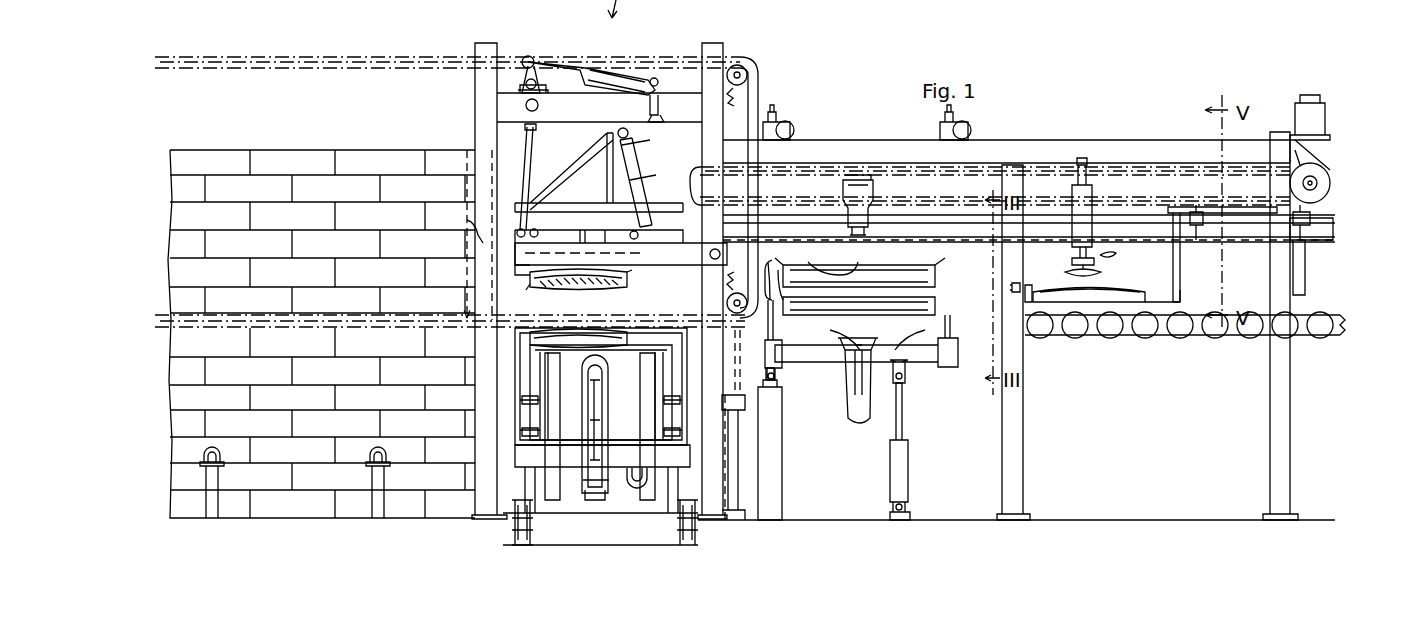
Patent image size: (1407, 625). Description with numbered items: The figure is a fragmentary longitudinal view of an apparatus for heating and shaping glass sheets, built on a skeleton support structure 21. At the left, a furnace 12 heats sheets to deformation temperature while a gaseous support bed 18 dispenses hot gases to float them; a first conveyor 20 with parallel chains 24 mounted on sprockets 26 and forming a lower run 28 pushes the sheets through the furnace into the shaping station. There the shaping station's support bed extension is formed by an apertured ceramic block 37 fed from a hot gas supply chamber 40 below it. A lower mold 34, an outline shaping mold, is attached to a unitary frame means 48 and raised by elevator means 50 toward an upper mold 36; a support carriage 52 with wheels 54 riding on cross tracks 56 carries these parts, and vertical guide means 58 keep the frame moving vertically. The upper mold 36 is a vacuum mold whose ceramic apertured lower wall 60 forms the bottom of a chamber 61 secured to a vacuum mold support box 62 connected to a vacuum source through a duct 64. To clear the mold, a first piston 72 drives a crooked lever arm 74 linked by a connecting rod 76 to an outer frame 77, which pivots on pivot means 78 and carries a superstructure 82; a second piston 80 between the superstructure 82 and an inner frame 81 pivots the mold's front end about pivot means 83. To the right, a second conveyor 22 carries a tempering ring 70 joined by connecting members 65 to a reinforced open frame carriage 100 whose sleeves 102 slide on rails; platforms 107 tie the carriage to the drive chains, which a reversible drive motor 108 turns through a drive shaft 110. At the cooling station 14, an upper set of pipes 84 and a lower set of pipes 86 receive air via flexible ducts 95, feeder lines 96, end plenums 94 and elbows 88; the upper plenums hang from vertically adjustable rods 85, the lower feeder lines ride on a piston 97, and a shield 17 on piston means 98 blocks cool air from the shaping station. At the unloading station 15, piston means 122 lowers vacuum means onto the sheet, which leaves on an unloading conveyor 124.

The furnace 12 is at (248, 122).
The cooling station 14 is at (862, 112).
The unloading station 15 is at (1126, 112).
The shield 17 is at (768, 405).
The gaseous support bed 18 is at (314, 319).
The first conveyor 20 is at (316, 38).
The skeleton support structure 21 is at (463, 87).
The second conveyor 22 is at (873, 154).
The chains 24 is at (200, 58).
The sprockets 26 is at (750, 82).
The lower run 28 is at (160, 318).
The lower mold 34 is at (625, 322).
The upper mold 36 is at (596, 291).
The apertured ceramic block 37 is at (622, 360).
The hot gas supply chamber 40 is at (650, 397).
The unitary frame means 48 is at (655, 340).
The elevator means 50 is at (585, 488).
The support carriage 52 is at (629, 488).
The wheels 54 is at (512, 518).
The cross tracks 56 is at (512, 538).
The vertical guide means 58 is at (520, 388).
The ceramic apertured lower wall 60 is at (580, 285).
The chamber 61 is at (529, 290).
The vacuum mold support box 62 is at (530, 266).
The duct 64 is at (590, 237).
The connecting members 65 is at (1162, 300).
The tempering ring 70 is at (1125, 335).
The first piston 72 is at (612, 82).
The crooked lever arm 74 is at (540, 104).
The connecting rod 76 is at (532, 136).
The outer frame 77 is at (490, 243).
The pivot means 78 is at (705, 255).
The second piston 80 is at (645, 170).
The inner frame 81 is at (628, 274).
The superstructure 82 is at (605, 182).
The pivot means 83 is at (533, 235).
The upper set of pipes 84 is at (940, 276).
The vertically adjustable rods 85 is at (776, 110).
The lower set of pipes 86 is at (940, 300).
The elbows 88 is at (960, 345).
The end plenum 94 is at (777, 378).
The flexible ducts 95 is at (840, 192).
The feeder lines 96 is at (840, 262).
The piston 97 is at (905, 475).
The piston means 98 is at (740, 483).
The reinforced open frame carriage 100 is at (1322, 262).
The sleeves 102 is at (1312, 210).
The platforms 107 is at (1205, 208).
The reversible drive motor 108 is at (1322, 110).
The drive shaft 110 is at (1330, 183).
The piston means 122 is at (1095, 185).
The unloading conveyor 124 is at (1162, 353).